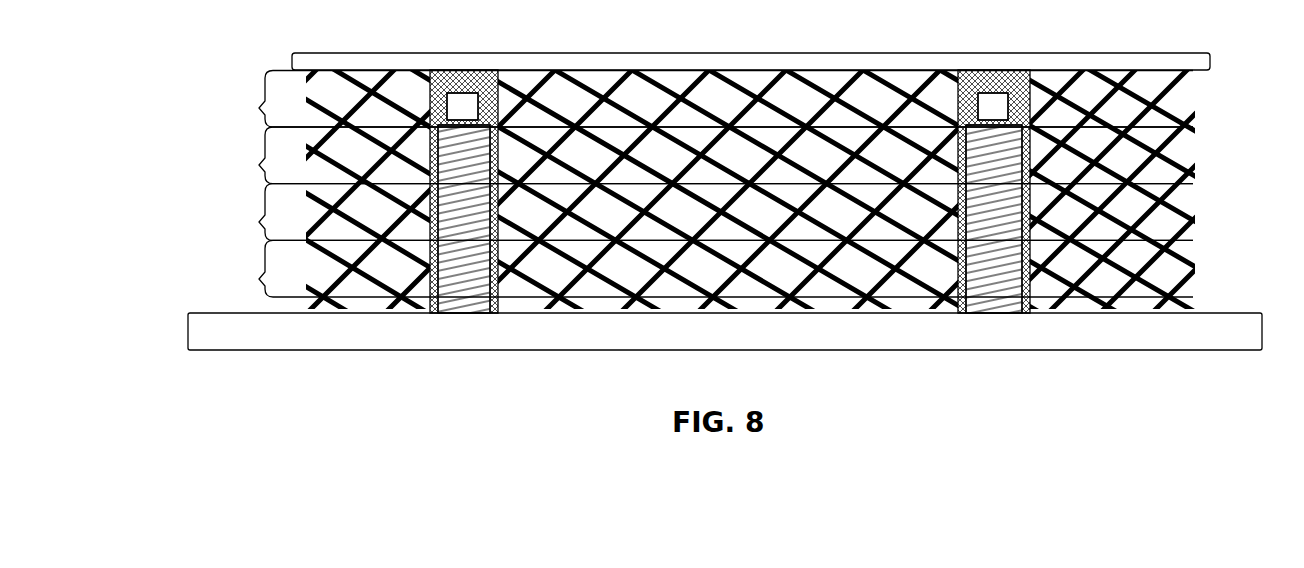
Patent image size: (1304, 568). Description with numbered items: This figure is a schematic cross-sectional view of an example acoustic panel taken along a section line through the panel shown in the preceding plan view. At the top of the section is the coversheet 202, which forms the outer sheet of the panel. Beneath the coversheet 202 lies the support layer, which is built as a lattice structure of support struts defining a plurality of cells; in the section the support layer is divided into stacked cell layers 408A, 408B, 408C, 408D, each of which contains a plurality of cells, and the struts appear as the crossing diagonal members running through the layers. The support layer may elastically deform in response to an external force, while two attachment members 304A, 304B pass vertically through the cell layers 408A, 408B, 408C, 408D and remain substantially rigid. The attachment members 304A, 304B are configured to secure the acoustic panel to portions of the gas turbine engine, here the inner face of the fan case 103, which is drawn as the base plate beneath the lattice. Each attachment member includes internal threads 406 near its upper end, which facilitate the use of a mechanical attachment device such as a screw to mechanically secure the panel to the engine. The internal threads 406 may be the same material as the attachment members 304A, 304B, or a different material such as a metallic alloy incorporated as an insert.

The coversheet 202 is at (1190, 52).
The fan case 103 is at (1222, 313).
The cell layer 408A is at (682, 99).
The cell layer 408B is at (682, 155).
The cell layer 408C is at (682, 212).
The cell layer 408D is at (682, 268).
The attachment member 304A is at (438, 313).
The attachment member 304B is at (978, 313).
The internal threads 406 is at (462, 137).